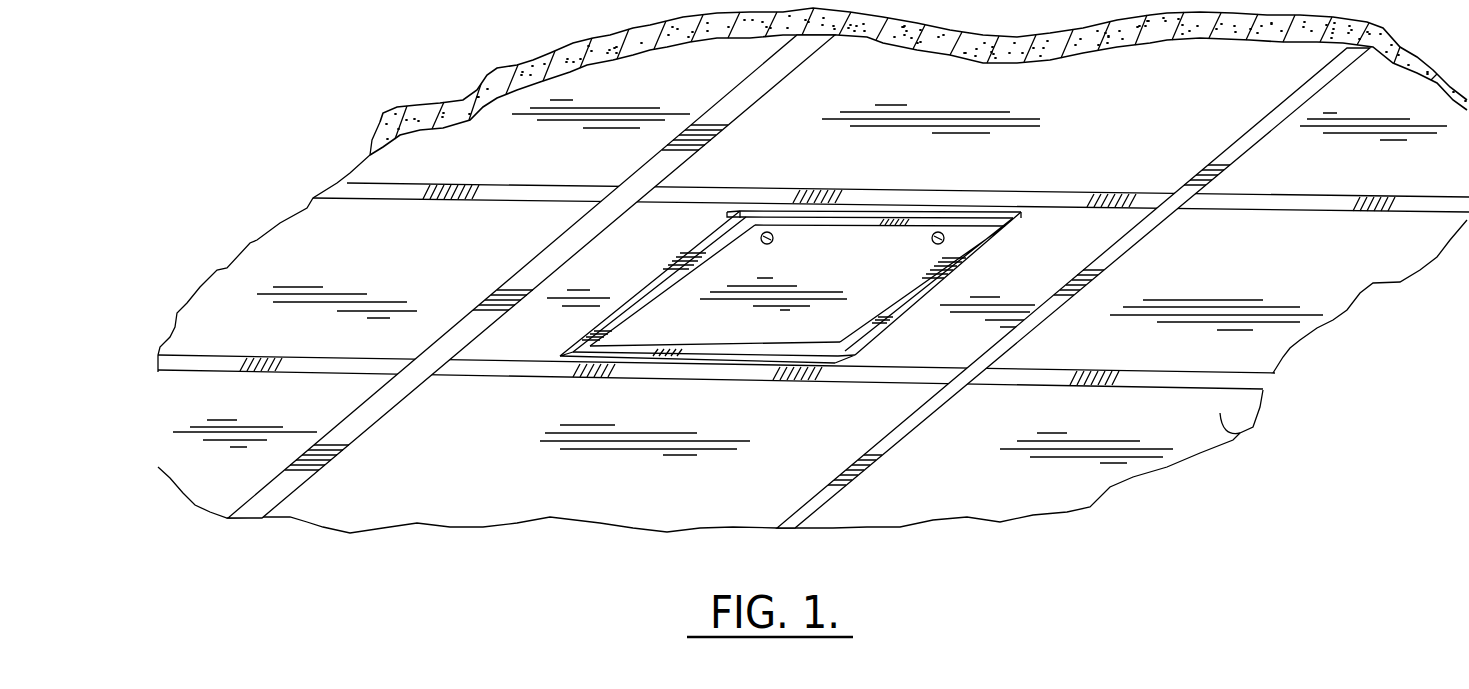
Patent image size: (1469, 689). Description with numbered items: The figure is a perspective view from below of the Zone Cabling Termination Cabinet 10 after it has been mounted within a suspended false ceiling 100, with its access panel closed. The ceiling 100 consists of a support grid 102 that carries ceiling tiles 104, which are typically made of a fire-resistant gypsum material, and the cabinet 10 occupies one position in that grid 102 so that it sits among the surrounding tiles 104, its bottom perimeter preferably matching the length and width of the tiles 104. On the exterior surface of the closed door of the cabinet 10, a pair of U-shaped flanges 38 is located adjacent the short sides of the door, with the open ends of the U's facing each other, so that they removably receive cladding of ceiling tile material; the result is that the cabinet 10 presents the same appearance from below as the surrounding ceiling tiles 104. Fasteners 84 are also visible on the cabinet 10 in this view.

The Zone Cabling Termination Cabinet 10 is at (877, 317).
The U-shaped flanges 38 is at (630, 322).
The fasteners 84 is at (932, 244).
The suspended false ceiling 100 is at (595, 532).
The support grid 102 is at (490, 196).
The ceiling tiles 104 is at (262, 462).